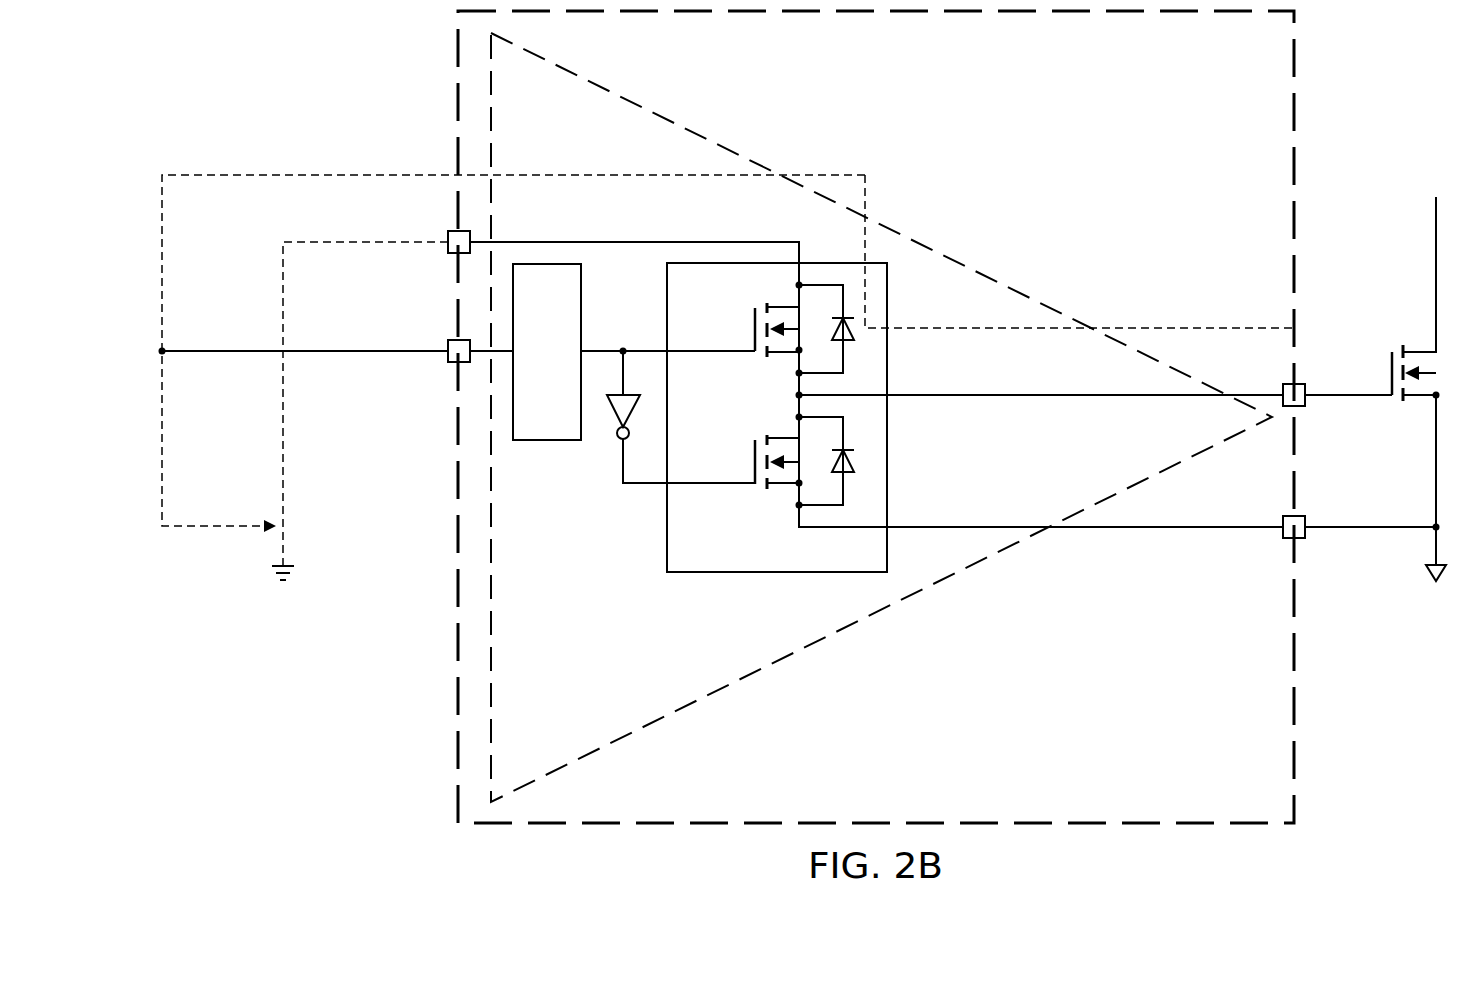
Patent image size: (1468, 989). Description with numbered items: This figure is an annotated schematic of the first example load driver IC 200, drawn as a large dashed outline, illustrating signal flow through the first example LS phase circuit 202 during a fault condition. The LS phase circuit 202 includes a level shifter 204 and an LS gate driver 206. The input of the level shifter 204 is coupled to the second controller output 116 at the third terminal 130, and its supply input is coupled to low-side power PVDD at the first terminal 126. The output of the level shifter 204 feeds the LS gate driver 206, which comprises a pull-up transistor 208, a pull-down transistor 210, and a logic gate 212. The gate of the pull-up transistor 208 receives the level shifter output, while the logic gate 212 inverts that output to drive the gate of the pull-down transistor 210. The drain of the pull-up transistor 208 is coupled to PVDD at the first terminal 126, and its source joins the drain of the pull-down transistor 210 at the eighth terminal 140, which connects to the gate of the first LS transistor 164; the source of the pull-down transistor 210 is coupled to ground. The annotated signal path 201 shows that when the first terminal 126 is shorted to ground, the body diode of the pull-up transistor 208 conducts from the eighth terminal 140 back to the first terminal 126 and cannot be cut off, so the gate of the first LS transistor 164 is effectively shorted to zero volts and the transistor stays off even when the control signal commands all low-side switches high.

The first example load driver integrated circuit 200 is at (1295, 171).
The signal path 201 is at (312, 178).
The first example LS phase circuit 202 is at (893, 605).
The level shifter 204 is at (581, 318).
The LS gate driver 206 is at (975, 451).
The pull-up transistor 208 is at (752, 317).
The pull-down transistor 210 is at (752, 450).
The logic gate 212 is at (614, 412).
The second controller output 116 is at (366, 354).
The first terminal 126 is at (447, 252).
The third terminal 130 is at (447, 362).
The eighth terminal 140 is at (1306, 405).
The first LS transistor 164 is at (1392, 360).